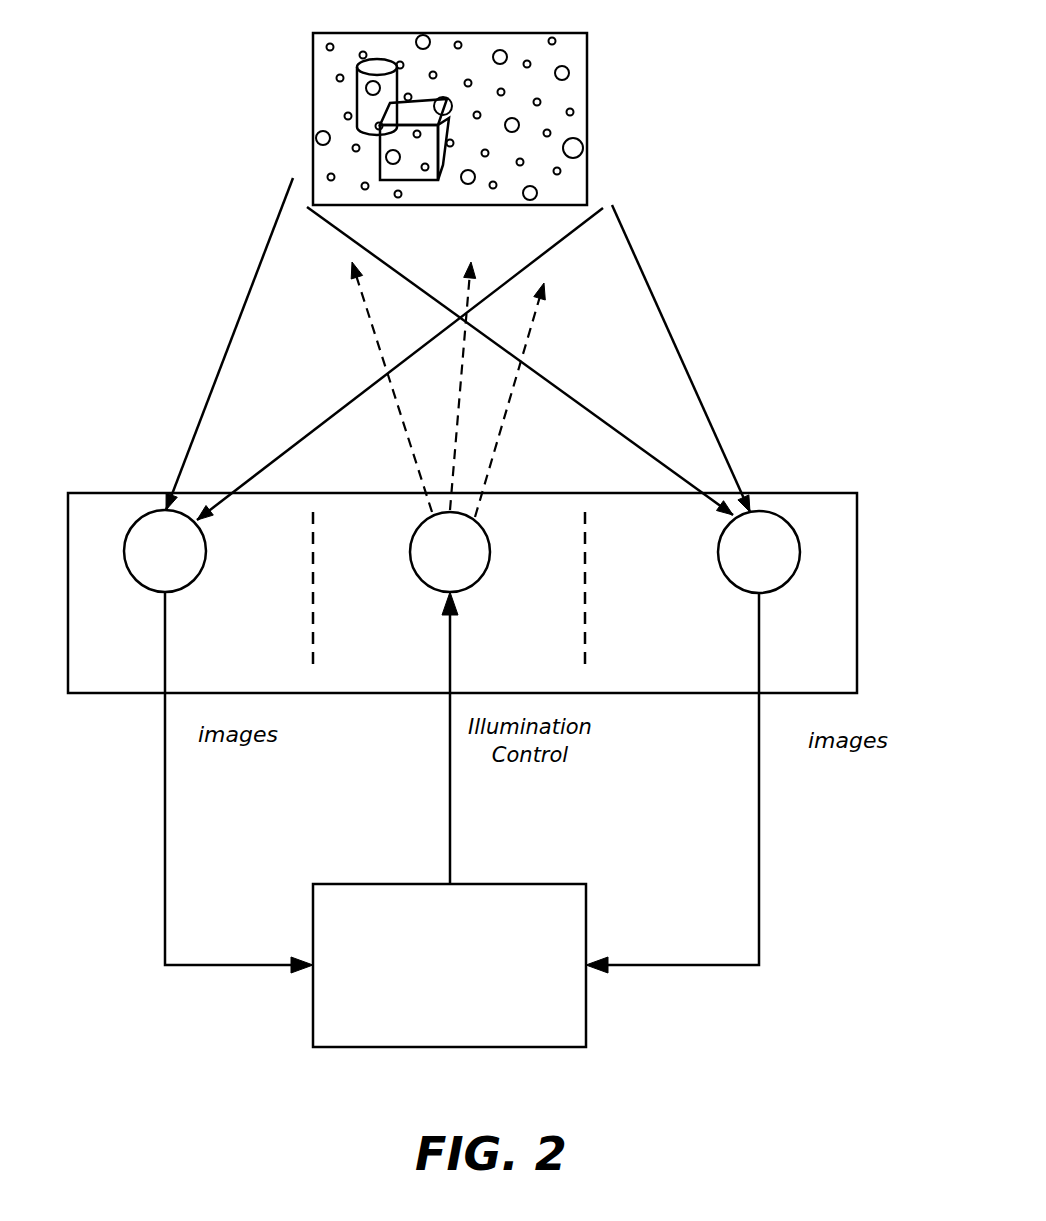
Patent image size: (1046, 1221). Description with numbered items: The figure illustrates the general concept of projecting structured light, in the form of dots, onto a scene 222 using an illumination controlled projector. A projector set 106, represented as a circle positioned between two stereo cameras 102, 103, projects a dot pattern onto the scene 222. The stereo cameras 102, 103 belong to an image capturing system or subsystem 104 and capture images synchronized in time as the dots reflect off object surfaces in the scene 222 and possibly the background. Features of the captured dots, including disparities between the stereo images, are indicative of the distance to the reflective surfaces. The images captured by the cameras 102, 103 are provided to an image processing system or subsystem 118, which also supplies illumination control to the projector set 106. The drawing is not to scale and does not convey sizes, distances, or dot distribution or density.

The scene 222 is at (570, 127).
The stereo camera 102 is at (165, 551).
The stereo camera 103 is at (759, 552).
The projector set 106 is at (450, 552).
The image capturing system or subsystem 104 is at (807, 632).
The image processing system or subsystem 118 is at (449, 965).